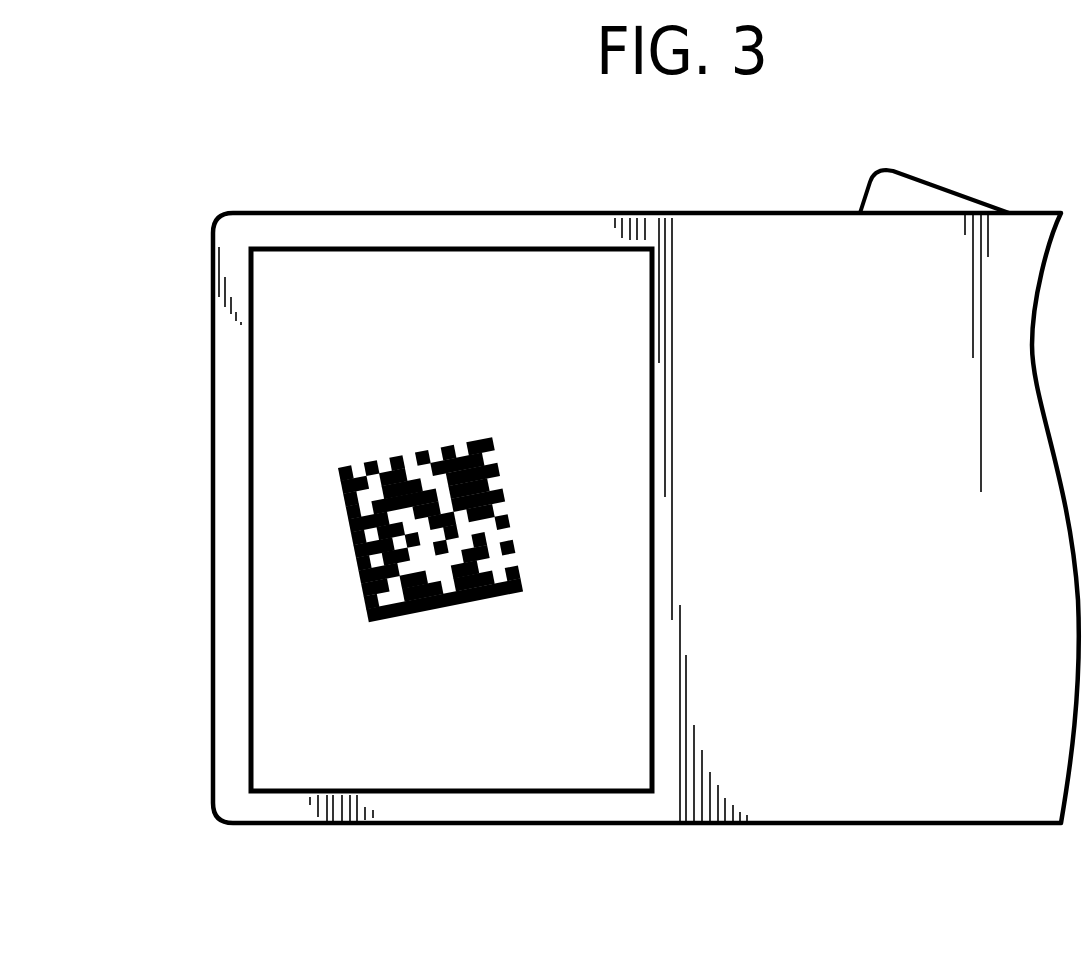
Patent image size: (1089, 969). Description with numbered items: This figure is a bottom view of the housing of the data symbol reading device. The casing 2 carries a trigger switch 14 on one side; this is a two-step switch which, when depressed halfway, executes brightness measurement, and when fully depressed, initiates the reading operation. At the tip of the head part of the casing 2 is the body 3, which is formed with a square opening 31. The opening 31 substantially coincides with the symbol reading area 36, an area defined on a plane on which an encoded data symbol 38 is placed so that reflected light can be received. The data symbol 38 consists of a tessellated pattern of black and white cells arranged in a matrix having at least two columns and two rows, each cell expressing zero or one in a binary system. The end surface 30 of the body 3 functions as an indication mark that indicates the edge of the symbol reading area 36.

The casing 2 is at (756, 207).
The body 3 is at (430, 838).
The trigger switch 14 is at (921, 196).
The end surface 30 is at (227, 452).
The opening 31 is at (265, 751).
The symbol reading area 36 is at (522, 268).
The data symbol 38 is at (509, 506).